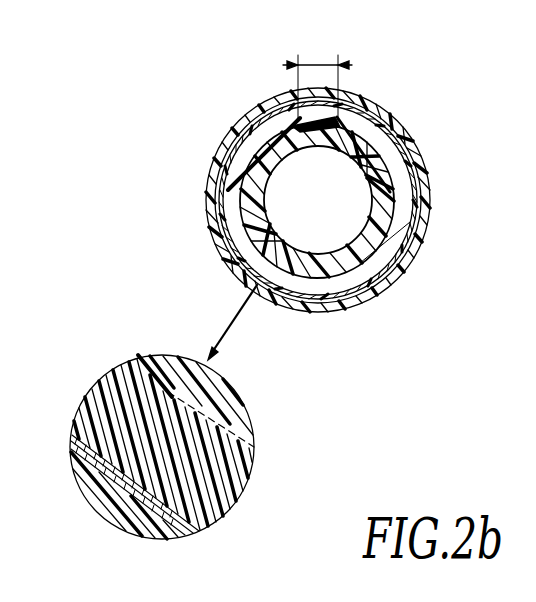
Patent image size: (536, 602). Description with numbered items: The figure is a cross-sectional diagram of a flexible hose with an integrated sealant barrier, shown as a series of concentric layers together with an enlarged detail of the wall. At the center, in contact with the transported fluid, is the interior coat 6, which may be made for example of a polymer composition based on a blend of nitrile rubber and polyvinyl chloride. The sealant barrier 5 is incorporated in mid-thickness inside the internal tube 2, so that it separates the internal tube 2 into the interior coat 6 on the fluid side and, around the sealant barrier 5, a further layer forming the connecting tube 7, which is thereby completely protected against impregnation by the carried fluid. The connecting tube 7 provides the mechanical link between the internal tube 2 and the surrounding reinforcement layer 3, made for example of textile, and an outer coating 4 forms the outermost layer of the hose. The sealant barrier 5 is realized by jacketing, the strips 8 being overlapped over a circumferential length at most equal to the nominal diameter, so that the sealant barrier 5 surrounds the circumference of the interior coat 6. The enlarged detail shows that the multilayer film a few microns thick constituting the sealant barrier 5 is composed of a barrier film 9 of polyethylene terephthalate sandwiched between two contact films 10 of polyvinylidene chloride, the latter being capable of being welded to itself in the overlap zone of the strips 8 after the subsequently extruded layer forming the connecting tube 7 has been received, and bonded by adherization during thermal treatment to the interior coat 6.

The internal tube 2 is at (310, 410).
The reinforcement layer 3 is at (360, 115).
The coating 4 is at (421, 166).
The sealant barrier 5 is at (388, 237).
The interior coat 6 is at (372, 276).
The connecting tube 7 is at (246, 128).
The strips 8 is at (318, 65).
The barrier film 9 is at (165, 362).
The contact films 10 is at (152, 384).